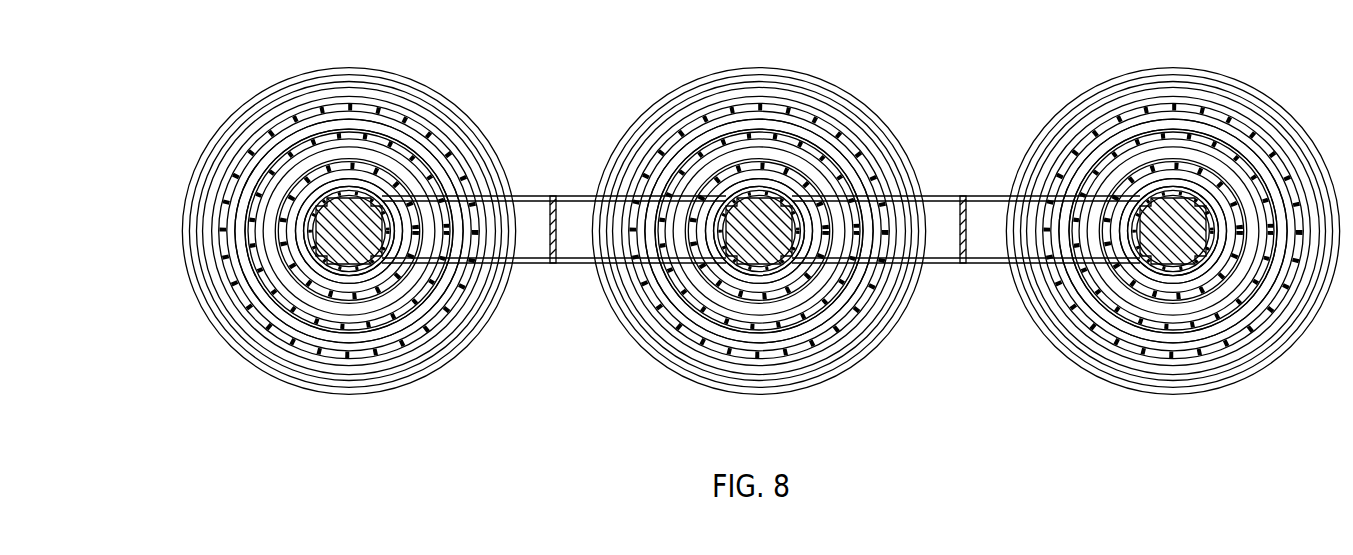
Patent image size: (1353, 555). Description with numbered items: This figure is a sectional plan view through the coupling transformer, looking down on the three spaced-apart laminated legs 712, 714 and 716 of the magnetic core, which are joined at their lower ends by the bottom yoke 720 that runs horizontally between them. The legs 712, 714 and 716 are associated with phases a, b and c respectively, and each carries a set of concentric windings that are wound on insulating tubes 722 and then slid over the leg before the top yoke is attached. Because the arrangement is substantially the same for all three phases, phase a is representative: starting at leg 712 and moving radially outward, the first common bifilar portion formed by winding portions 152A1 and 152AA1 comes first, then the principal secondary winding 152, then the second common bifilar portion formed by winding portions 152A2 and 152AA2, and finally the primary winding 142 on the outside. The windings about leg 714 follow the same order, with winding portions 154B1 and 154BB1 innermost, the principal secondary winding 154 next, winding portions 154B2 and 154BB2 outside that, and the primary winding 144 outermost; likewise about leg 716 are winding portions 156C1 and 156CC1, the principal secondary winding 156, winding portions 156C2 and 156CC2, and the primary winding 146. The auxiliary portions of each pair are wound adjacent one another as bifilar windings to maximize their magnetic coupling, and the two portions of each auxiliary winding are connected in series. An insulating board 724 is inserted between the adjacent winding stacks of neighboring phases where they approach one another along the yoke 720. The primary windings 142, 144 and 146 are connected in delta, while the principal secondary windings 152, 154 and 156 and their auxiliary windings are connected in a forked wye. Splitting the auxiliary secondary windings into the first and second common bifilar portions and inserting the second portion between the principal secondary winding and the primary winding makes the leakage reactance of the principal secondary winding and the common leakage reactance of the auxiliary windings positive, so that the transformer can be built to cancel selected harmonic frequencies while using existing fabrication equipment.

The primary winding 142 is at (393, 386).
The primary winding 144 is at (820, 386).
The primary winding 146 is at (1223, 385).
The principal secondary winding 152 is at (313, 307).
The principal secondary winding 154 is at (727, 305).
The principal secondary winding 156 is at (1147, 308).
The winding portion 152A1 is at (323, 187).
The winding portion 152AA1 is at (326, 157).
The winding portion 152A2 is at (360, 122).
The winding portion 152AA2 is at (361, 182).
The winding portion 154B1 is at (737, 185).
The winding portion 154BB1 is at (732, 157).
The winding portion 154B2 is at (788, 123).
The winding portion 154BB2 is at (786, 182).
The winding portion 156C1 is at (1170, 180).
The winding portion 156CC1 is at (1164, 157).
The winding portion 156C2 is at (1217, 123).
The winding portion 156CC2 is at (1197, 182).
The leg 712 is at (313, 229).
The leg 714 is at (728, 198).
The leg 716 is at (1140, 198).
The bottom yoke 720 is at (560, 264).
The insulating tube 722 is at (463, 170).
The insulating board 724 is at (553, 197).